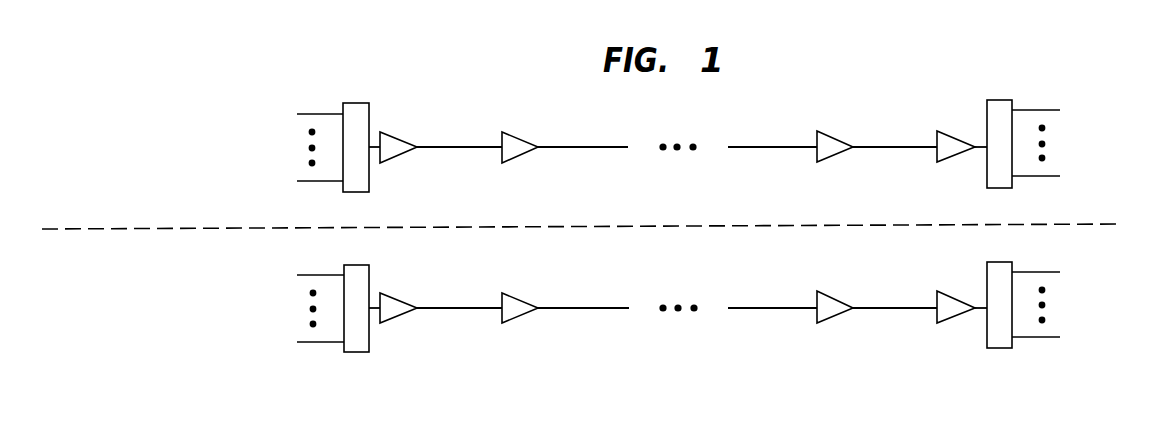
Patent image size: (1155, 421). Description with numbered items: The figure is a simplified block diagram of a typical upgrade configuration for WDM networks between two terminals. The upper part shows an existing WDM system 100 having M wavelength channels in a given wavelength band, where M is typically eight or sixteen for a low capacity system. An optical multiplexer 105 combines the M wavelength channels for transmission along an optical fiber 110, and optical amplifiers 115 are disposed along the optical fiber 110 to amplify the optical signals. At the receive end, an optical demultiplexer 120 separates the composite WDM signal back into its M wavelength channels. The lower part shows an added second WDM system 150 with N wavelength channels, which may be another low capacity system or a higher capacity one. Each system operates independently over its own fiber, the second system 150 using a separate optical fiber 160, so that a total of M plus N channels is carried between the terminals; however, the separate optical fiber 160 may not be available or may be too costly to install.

The WDM system 100 is at (105, 107).
The optical multiplexer 105 is at (355, 103).
The optical fiber 110 is at (587, 147).
The optical amplifiers 115 is at (498, 132).
The optical demultiplexer 120 is at (997, 100).
The second WDM system 150 is at (106, 371).
The separate optical fiber 160 is at (587, 310).